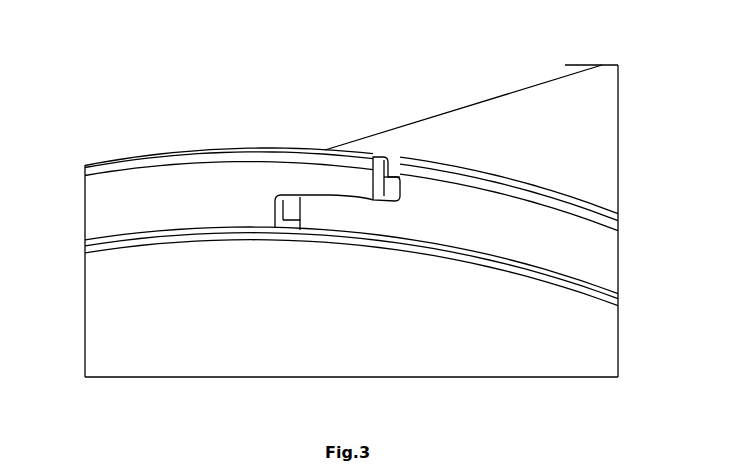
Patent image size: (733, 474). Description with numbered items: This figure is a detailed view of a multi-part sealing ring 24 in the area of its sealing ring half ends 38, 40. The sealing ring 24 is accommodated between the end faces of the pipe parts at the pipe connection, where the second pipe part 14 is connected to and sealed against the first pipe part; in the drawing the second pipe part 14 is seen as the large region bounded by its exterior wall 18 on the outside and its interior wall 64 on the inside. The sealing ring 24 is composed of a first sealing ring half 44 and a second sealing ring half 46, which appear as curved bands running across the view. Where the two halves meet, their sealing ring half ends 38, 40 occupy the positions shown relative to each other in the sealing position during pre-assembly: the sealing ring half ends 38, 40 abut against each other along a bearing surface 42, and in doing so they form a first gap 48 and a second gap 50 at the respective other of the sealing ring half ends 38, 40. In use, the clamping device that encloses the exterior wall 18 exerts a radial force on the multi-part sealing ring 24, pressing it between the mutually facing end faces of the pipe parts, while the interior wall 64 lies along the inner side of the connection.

The second pipe part 14 is at (485, 99).
The exterior wall 18 is at (598, 122).
The sealing ring 24 is at (225, 149).
The sealing ring half end 38 is at (272, 180).
The sealing ring half end 40 is at (390, 204).
The bearing surface 42 is at (345, 200).
The first sealing ring half 44 is at (130, 212).
The second sealing ring half 46 is at (568, 254).
The first gap 48 is at (391, 155).
The second gap 50 is at (293, 233).
The interior wall 64 is at (120, 292).